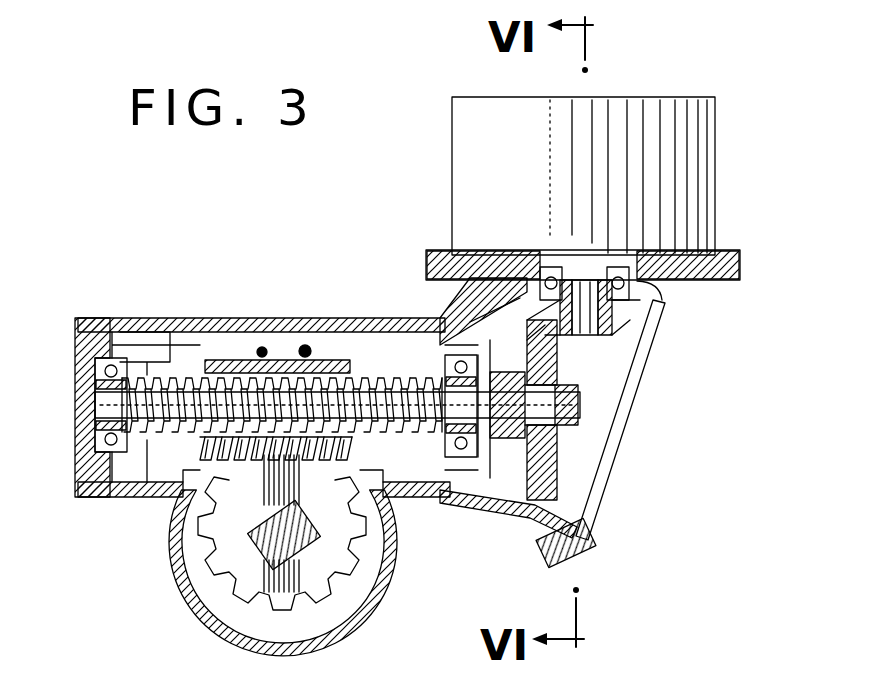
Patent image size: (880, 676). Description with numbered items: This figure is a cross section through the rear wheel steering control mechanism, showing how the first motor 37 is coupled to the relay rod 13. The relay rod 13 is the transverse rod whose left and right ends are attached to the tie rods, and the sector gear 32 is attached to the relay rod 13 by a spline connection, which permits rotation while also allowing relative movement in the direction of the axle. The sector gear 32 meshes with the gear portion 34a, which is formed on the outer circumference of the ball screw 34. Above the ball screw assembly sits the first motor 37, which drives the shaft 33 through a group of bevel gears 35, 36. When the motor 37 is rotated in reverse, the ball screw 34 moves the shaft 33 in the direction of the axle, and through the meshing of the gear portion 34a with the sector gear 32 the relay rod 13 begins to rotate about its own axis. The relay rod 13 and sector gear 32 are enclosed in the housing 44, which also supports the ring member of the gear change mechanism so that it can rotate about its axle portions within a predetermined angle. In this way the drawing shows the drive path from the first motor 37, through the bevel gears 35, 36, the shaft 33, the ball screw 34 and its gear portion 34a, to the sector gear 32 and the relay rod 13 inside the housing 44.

The relay rod 13 is at (262, 540).
The sector gear 32 is at (258, 580).
The shaft 33 is at (190, 372).
The ball screw 34 is at (284, 372).
The gear portion 34a is at (355, 456).
The bevel gear 35 is at (592, 478).
The bevel gear 36 is at (618, 333).
The first motor 37 is at (465, 180).
The housing 44 is at (392, 586).